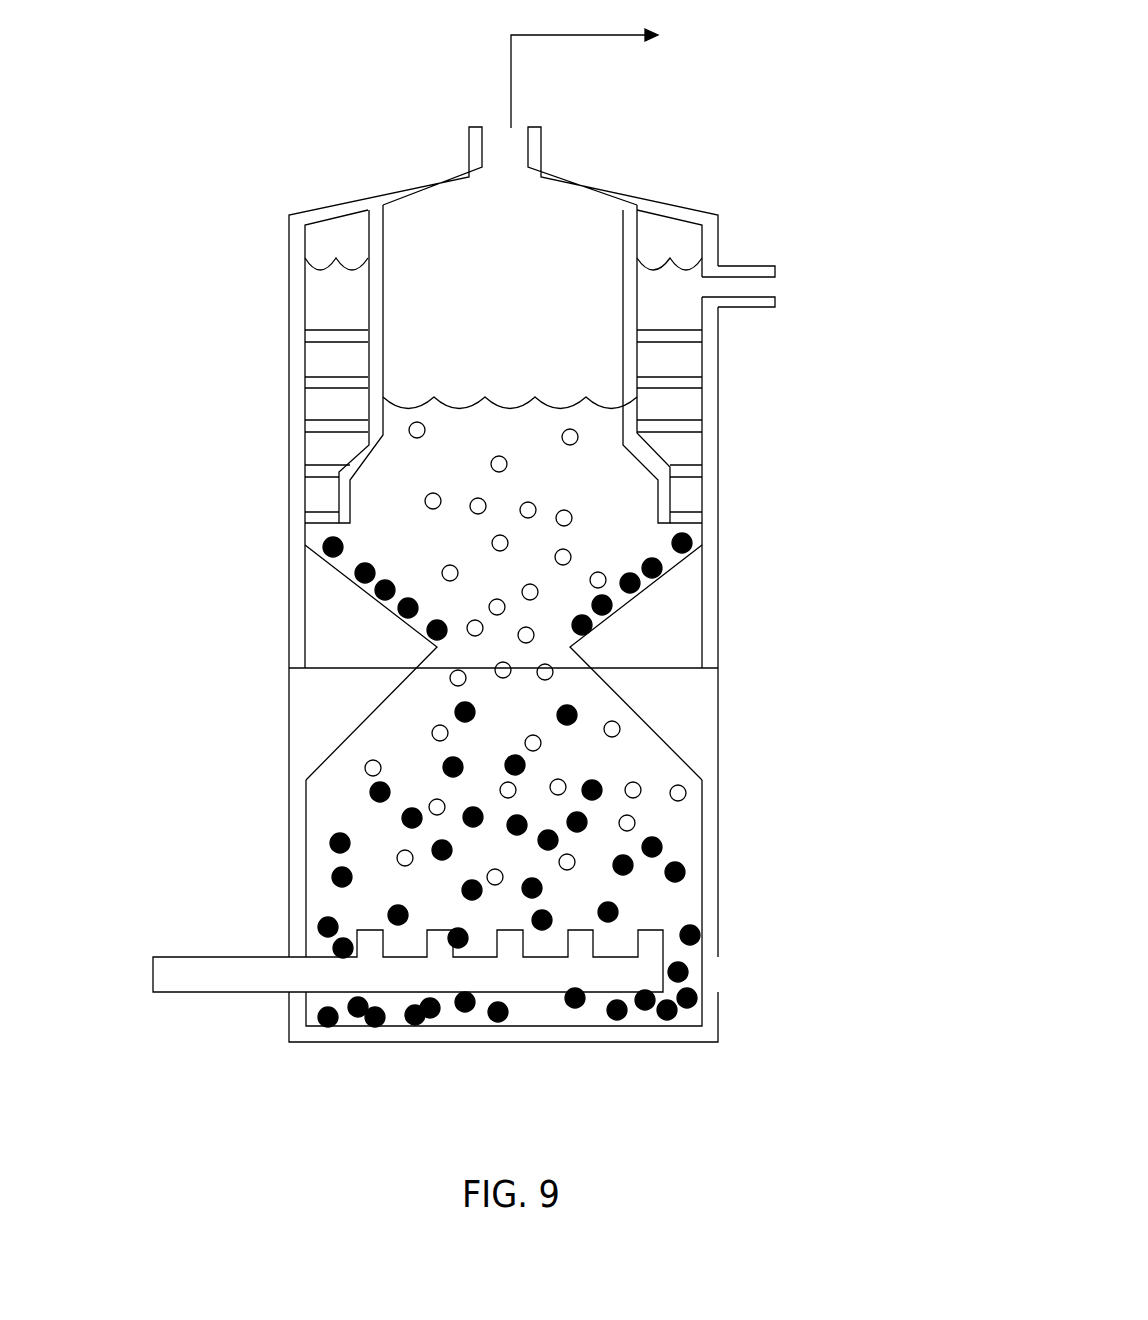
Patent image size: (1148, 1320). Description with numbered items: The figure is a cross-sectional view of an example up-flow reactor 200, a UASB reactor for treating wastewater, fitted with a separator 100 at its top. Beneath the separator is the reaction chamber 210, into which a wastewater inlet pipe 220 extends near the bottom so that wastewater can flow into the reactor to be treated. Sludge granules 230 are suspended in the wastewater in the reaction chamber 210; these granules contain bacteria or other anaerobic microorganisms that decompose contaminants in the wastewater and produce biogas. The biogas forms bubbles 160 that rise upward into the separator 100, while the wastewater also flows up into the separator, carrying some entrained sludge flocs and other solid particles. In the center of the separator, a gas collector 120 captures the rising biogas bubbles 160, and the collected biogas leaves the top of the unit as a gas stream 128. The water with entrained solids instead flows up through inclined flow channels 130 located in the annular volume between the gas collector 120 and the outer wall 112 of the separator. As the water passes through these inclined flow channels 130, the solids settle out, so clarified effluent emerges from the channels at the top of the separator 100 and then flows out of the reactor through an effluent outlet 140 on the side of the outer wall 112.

The separator 100 is at (708, 603).
The outer wall 112 is at (297, 492).
The gas collector 120 is at (358, 463).
The gas stream 128 is at (510, 92).
The inclined flow channels 130 is at (675, 452).
The effluent outlet 140 is at (763, 307).
The bubbles 160 is at (365, 768).
The reactor 200 is at (708, 716).
The reaction chamber 210 is at (670, 823).
The wastewater inlet pipe 220 is at (212, 980).
The sludge granules 230 is at (685, 872).